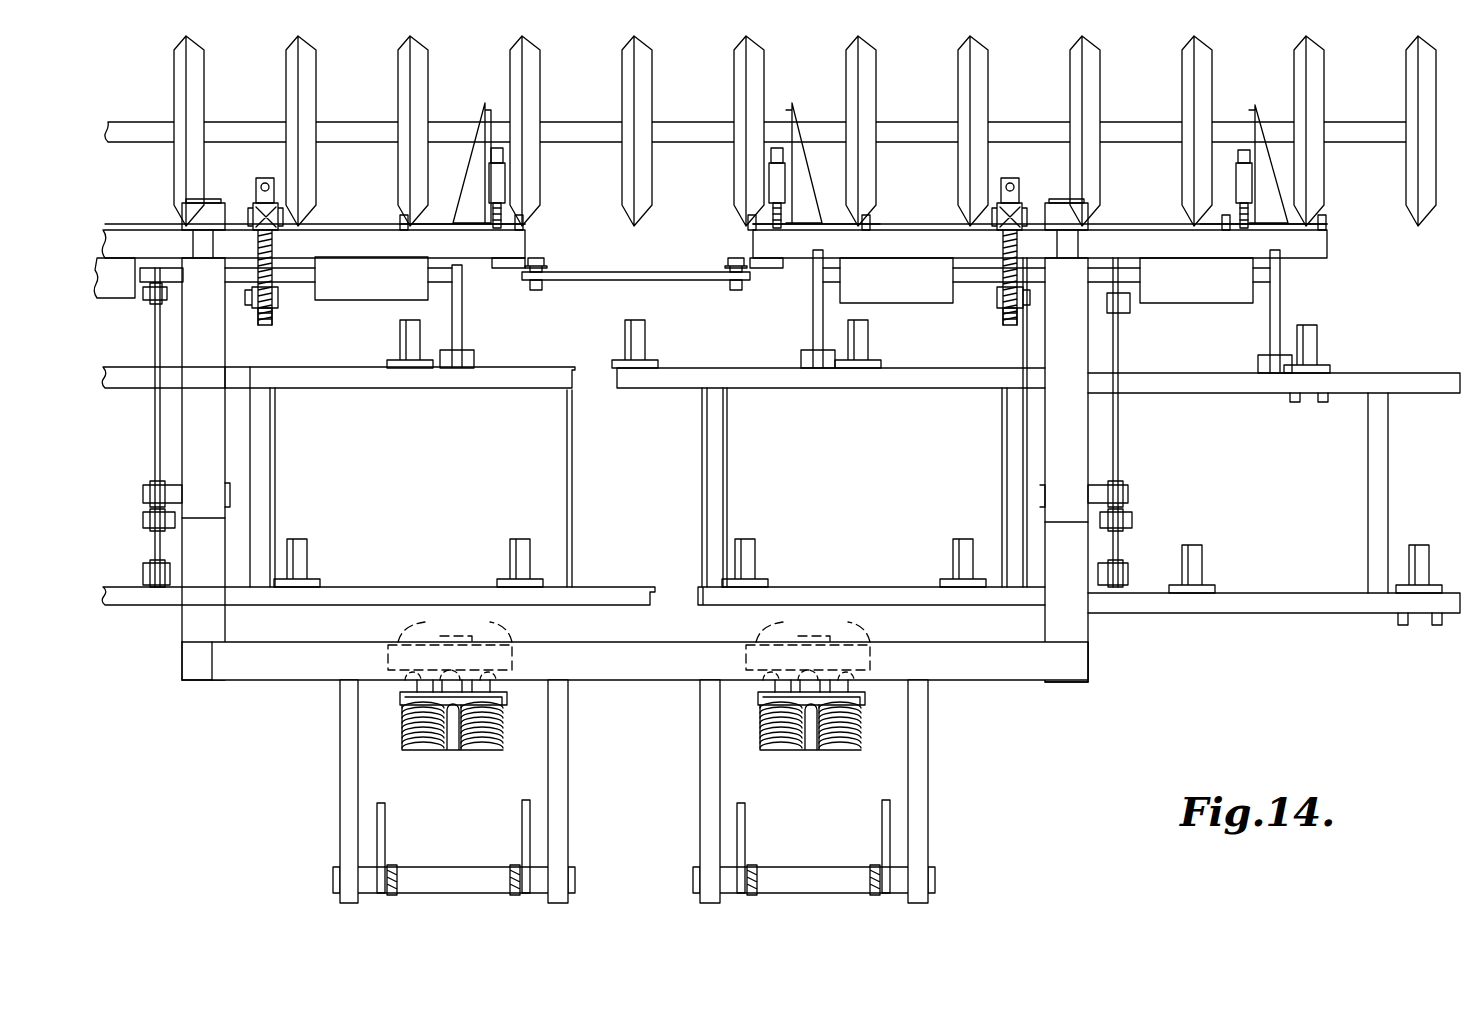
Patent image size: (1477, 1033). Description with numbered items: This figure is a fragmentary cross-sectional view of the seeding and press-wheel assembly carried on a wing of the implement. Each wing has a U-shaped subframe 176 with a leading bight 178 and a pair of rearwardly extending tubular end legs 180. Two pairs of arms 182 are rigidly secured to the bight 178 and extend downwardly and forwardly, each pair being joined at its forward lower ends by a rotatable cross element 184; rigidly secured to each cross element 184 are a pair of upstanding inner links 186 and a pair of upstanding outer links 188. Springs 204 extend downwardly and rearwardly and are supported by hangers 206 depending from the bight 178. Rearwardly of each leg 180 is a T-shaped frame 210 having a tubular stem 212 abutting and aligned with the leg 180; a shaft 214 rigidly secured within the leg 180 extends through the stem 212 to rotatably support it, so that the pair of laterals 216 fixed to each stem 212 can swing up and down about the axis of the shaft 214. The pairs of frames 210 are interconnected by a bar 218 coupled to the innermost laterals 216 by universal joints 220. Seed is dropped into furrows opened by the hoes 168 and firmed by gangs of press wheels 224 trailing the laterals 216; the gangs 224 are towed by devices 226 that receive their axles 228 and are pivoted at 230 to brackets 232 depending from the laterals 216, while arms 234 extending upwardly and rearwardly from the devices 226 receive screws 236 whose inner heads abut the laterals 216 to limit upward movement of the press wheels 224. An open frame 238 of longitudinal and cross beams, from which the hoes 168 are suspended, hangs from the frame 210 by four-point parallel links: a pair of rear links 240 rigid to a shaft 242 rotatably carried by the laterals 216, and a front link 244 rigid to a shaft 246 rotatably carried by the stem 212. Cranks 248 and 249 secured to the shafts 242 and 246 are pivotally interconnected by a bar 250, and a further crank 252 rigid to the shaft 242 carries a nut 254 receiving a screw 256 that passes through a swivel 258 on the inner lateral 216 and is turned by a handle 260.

The hoe 168 is at (625, 345).
The U-shaped subframe 176 is at (1060, 690).
The bight 178 is at (628, 636).
The end leg 180 is at (185, 628).
The arm 182 is at (340, 796).
The cross element 184 is at (470, 898).
The inner link 186 is at (400, 880).
The outer link 188 is at (386, 822).
The spring 204 is at (478, 768).
The hanger 206 is at (629, 645).
The T-shaped frame 210 is at (228, 447).
The stem 212 is at (240, 398).
The shaft 214 is at (195, 204).
The lateral 216 is at (106, 236).
The bar 218 is at (632, 280).
The universal joint 220 is at (546, 258).
The press wheel gang 224 is at (378, 47).
The towing device 226 is at (474, 108).
The axle 228 is at (128, 104).
The pivot 230 is at (452, 232).
The bracket 232 is at (404, 216).
The arm 234 is at (498, 182).
The screw 236 is at (500, 155).
The open frame 238 is at (1400, 374).
The rear link 240 is at (465, 352).
The shaft 242 is at (308, 282).
The front link 244 is at (152, 552).
The shaft 246 is at (145, 490).
The crank 248 is at (148, 300).
The crank 249 is at (143, 518).
The bar 250 is at (155, 408).
The crank 252 is at (250, 302).
The nut 254 is at (276, 308).
The screw 256 is at (272, 254).
The swivel 258 is at (260, 214).
The handle 260 is at (265, 178).